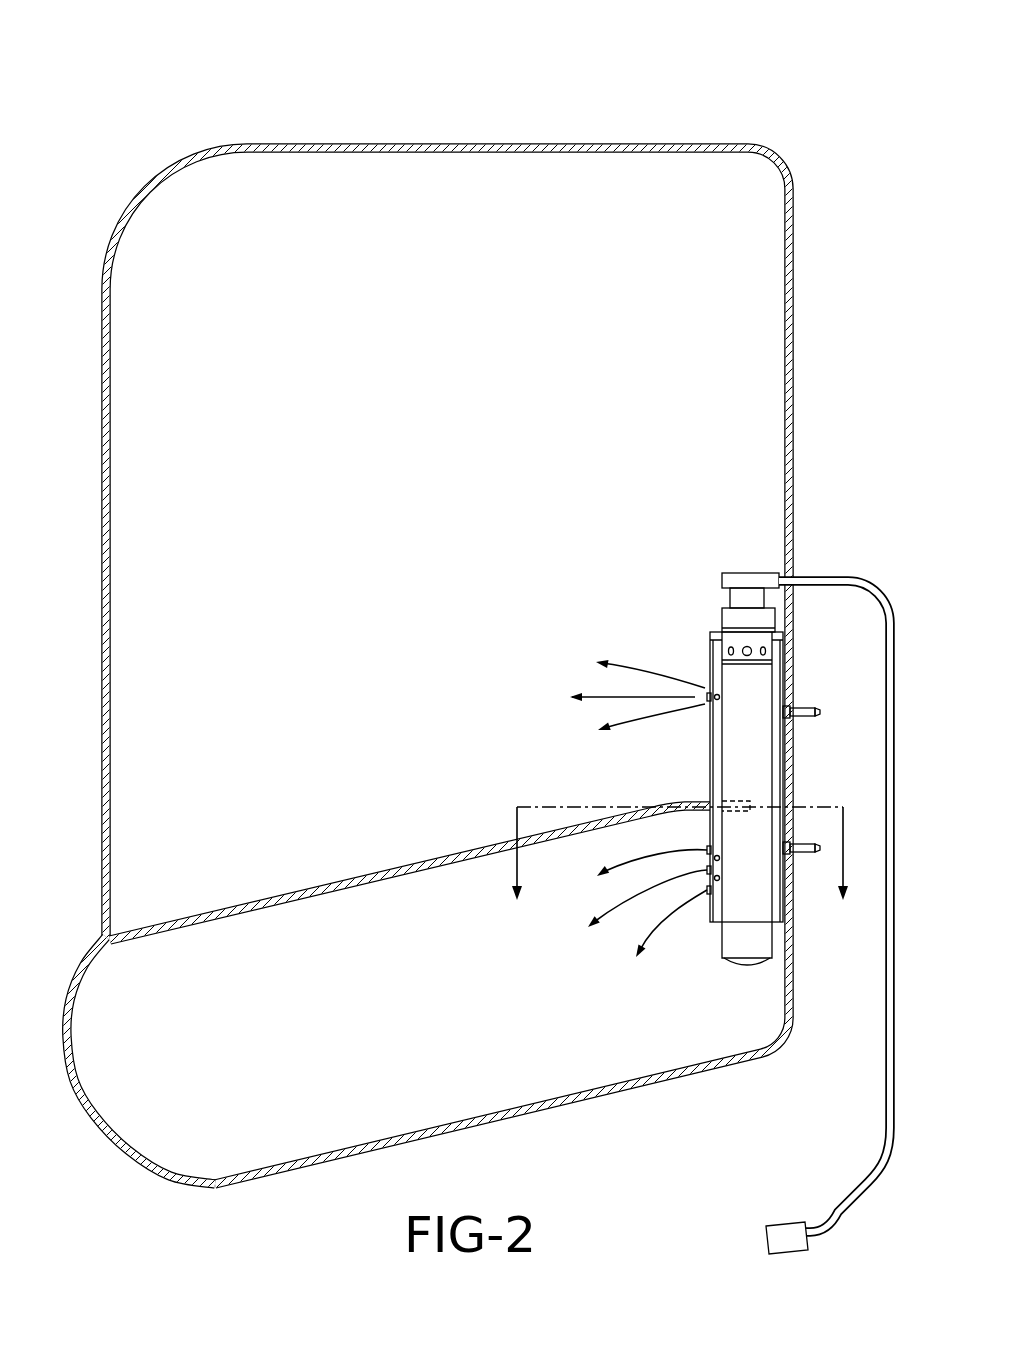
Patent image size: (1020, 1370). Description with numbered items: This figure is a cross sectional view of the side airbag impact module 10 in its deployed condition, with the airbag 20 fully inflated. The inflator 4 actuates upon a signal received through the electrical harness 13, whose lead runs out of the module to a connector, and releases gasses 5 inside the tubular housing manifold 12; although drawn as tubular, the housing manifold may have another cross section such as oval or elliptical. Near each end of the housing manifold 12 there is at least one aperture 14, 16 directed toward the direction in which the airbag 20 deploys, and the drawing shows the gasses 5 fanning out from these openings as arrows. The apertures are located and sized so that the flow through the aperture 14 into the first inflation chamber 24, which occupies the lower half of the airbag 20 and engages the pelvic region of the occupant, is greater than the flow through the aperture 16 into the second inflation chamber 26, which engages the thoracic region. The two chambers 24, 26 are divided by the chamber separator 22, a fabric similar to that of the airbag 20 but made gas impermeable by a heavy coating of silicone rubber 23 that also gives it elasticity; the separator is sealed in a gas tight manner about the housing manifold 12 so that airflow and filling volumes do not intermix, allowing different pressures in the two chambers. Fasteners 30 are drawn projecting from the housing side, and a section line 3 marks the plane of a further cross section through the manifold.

The side airbag impact module 10 is at (133, 126).
The airbag 20 is at (563, 140).
The second inflation chamber 26 is at (399, 178).
The chamber separator 22 is at (327, 883).
The silicone rubber 23 is at (410, 873).
The first inflation chamber 24 is at (190, 1120).
The inflator 4 is at (752, 767).
The tubular housing manifold 12 is at (722, 610).
The aperture 16 is at (708, 690).
The aperture 14 is at (707, 892).
The mounting studs / fasteners 30 is at (805, 706).
The gasses 5 is at (607, 700).
The electrical harness 13 is at (797, 1232).
The section line 3- 3 is at (680, 871).